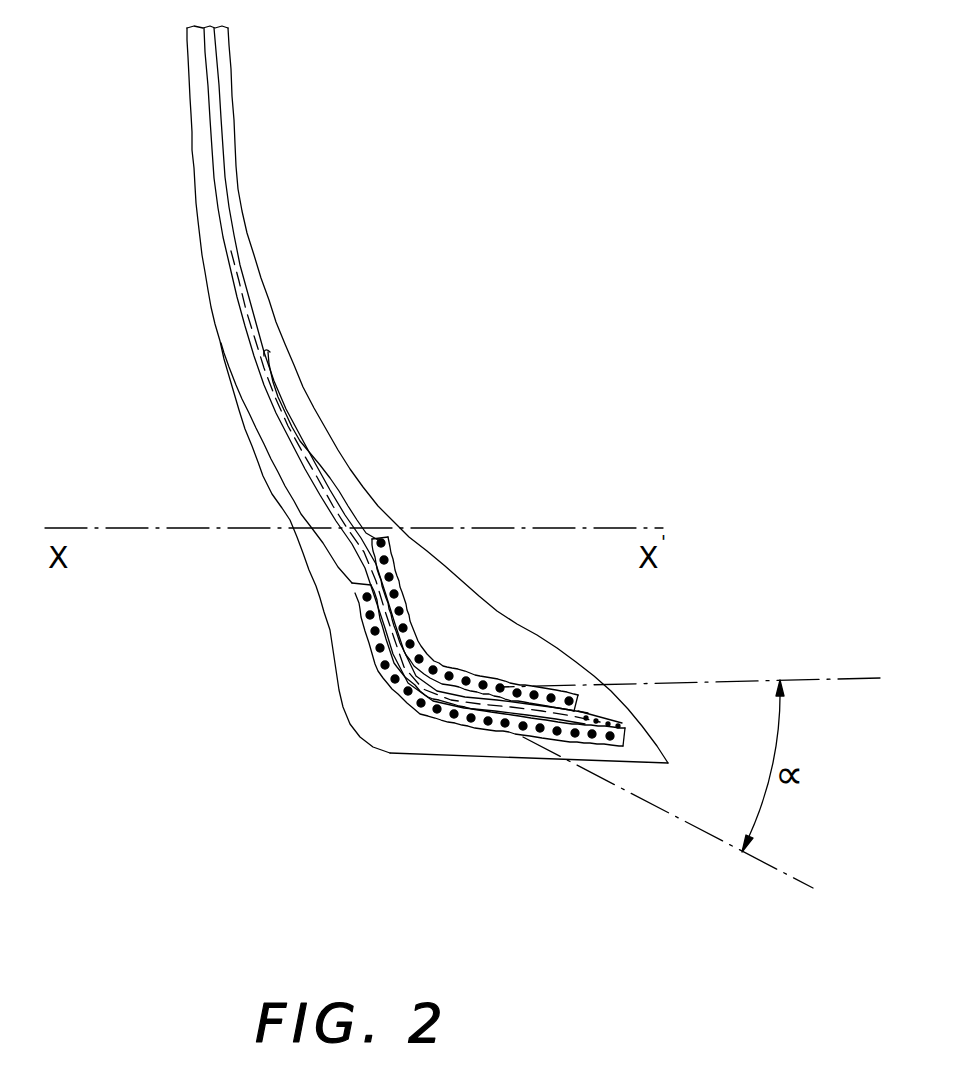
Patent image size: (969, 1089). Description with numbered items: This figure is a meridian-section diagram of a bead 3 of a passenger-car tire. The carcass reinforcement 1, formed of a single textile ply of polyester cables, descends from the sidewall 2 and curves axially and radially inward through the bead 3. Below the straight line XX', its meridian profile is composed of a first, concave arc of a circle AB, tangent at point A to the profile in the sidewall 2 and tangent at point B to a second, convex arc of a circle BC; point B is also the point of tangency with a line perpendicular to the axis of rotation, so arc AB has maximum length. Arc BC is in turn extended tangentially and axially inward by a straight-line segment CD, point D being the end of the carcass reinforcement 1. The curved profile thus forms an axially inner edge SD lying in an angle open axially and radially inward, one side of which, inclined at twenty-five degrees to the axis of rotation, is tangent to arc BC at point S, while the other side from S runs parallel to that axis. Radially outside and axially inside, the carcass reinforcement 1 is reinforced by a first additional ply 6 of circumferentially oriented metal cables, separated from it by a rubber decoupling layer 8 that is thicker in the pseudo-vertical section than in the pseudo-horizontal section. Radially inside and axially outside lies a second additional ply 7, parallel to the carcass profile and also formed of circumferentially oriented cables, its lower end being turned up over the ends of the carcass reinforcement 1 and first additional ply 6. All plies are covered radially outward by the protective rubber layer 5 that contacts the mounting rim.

The carcass reinforcement 1 is at (218, 152).
The sidewall 2 is at (222, 320).
The bead 3 is at (503, 622).
The protective rubber layer 5 is at (413, 753).
The first additional ply 6 is at (395, 578).
The second additional ply 7 is at (612, 748).
The rubber decoupling layer 8 is at (332, 492).
The point A is at (348, 533).
The point B is at (362, 594).
The point C is at (455, 704).
The point D is at (587, 717).
The point S is at (420, 684).